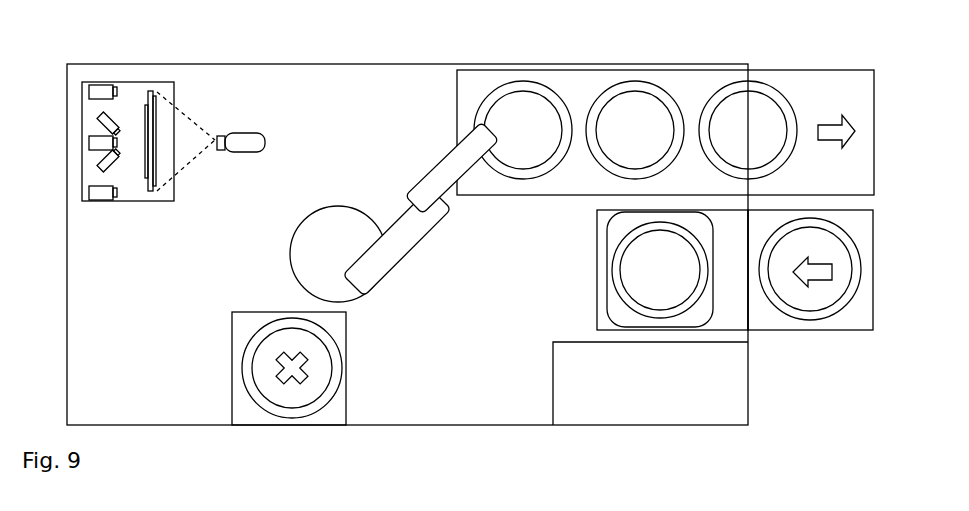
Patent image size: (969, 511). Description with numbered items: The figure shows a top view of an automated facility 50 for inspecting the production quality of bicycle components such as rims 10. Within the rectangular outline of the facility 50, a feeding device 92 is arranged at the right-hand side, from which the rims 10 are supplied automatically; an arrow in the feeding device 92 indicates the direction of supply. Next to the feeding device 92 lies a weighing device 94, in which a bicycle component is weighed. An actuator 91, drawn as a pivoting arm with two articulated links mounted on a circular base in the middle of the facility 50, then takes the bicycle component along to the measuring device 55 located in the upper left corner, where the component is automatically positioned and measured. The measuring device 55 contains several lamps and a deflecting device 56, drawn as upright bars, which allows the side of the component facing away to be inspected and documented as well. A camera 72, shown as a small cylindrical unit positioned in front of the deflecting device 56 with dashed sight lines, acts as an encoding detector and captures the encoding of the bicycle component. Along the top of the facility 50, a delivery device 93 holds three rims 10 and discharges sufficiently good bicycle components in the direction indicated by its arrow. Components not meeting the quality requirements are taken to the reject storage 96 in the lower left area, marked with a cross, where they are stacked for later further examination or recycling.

The rim 10 is at (530, 84).
The facility 50 is at (233, 425).
The measuring device 55 is at (146, 74).
The deflecting device 56 is at (155, 121).
The camera 72 is at (261, 127).
The actuator 91 is at (282, 236).
The feeding device 92 is at (850, 323).
The delivery device 93 is at (838, 86).
The weighing device 94 is at (618, 312).
The reject storage 96 is at (252, 408).